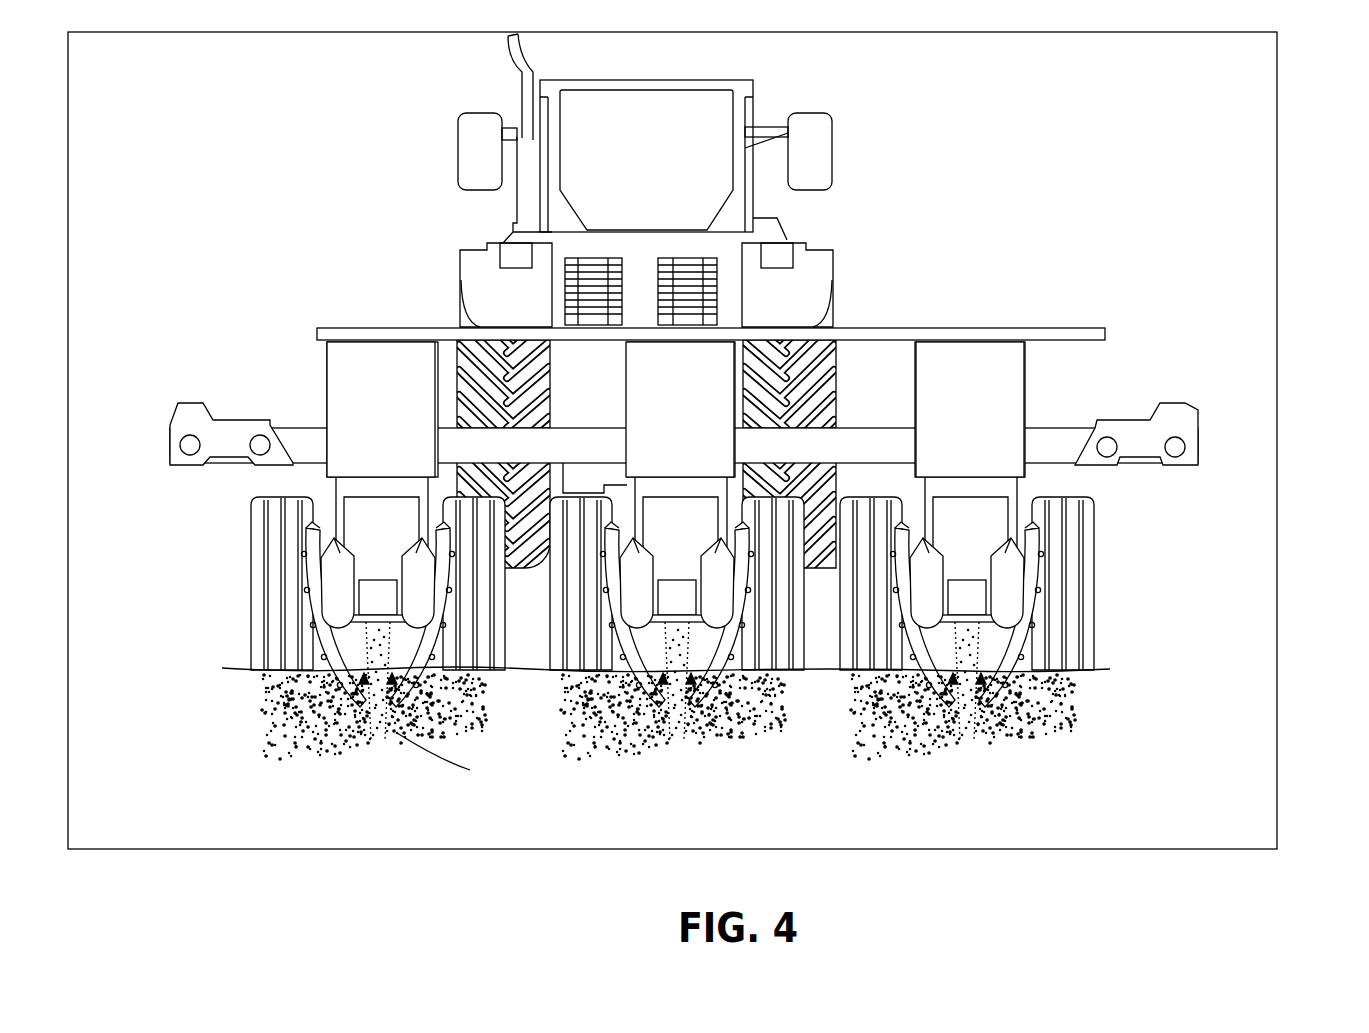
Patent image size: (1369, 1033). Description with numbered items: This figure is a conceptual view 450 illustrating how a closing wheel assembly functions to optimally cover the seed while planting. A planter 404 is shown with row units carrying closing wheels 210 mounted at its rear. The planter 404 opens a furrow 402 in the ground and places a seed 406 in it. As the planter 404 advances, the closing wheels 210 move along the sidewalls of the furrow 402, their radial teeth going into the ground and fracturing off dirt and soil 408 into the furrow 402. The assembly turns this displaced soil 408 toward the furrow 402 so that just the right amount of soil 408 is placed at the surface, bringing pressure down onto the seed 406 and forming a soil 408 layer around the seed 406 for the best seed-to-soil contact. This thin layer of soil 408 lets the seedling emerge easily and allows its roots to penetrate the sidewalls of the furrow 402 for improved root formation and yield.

The closing wheel 210 is at (307, 558).
The furrow 402 is at (378, 733).
The planter 404 is at (293, 433).
The seed 406 is at (400, 755).
The soil 408 is at (1080, 707).
The conceptual view 450 is at (1191, 855).